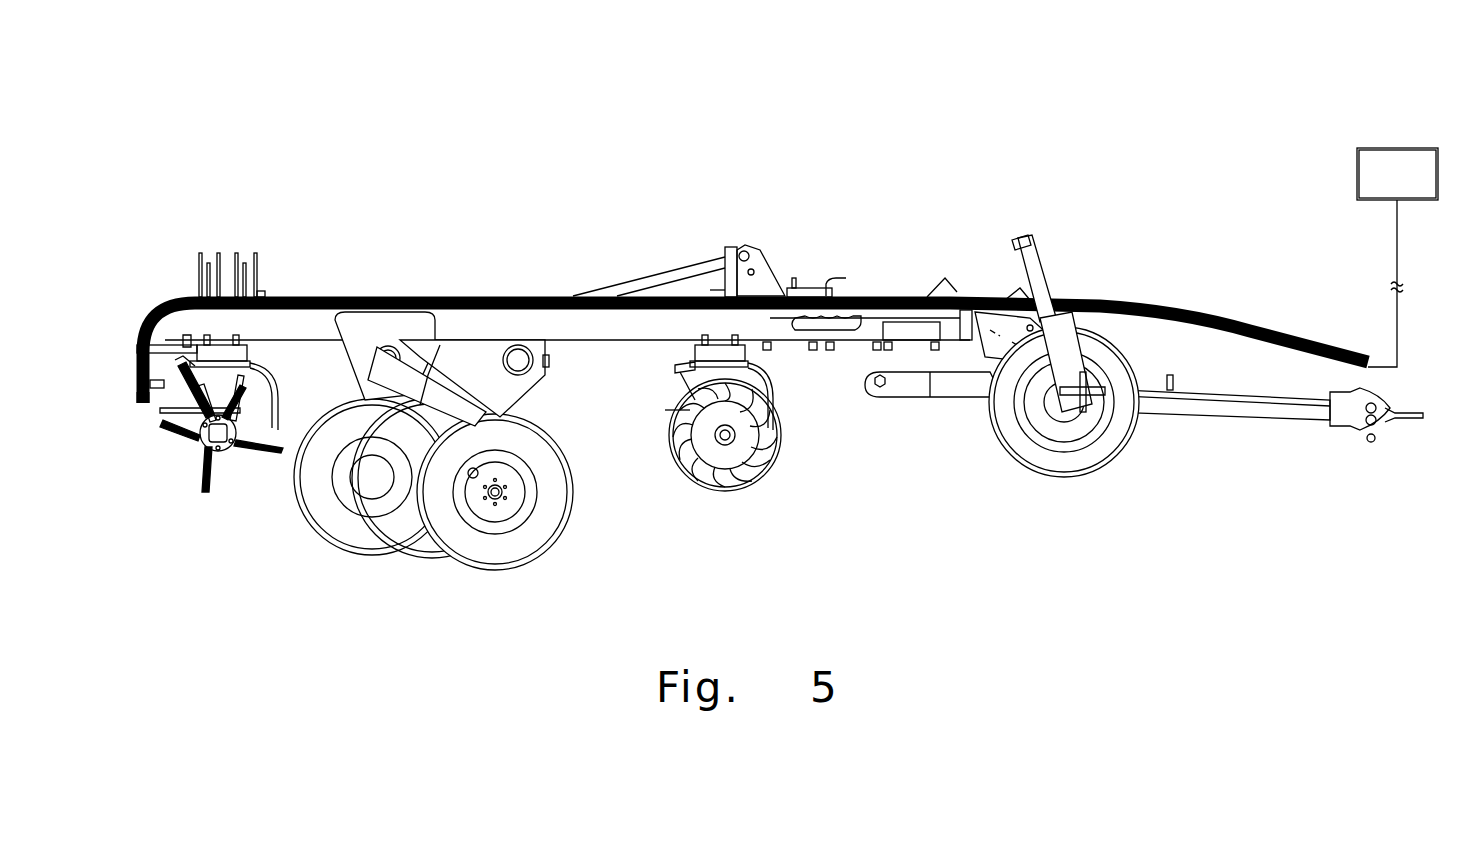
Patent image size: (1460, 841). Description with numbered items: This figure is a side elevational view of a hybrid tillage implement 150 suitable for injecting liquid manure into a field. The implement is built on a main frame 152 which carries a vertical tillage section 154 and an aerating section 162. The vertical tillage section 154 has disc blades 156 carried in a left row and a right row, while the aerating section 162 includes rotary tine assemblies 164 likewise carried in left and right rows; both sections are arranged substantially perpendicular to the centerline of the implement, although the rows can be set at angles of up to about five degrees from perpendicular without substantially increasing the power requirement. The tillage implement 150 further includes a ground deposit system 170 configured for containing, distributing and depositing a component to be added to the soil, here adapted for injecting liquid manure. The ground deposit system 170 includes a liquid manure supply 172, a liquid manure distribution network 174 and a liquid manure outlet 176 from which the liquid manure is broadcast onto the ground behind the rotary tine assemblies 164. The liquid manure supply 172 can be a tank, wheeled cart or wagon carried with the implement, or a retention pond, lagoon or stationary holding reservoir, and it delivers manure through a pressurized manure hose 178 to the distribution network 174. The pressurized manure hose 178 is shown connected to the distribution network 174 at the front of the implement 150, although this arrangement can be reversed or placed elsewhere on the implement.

The tillage implement 150 is at (1133, 236).
The main frame 152 is at (1264, 410).
The vertical tillage section 154 is at (752, 464).
The disc blades 156 is at (742, 500).
The aerating section 162 is at (223, 471).
The rotary tine assemblies 164 is at (228, 472).
The ground deposit system 170 is at (1424, 140).
The liquid manure supply 172 is at (1357, 158).
The liquid manure distribution network 174 is at (1258, 328).
The liquid manure outlet 176 is at (143, 407).
The pressurized manure hose 178 is at (1396, 239).